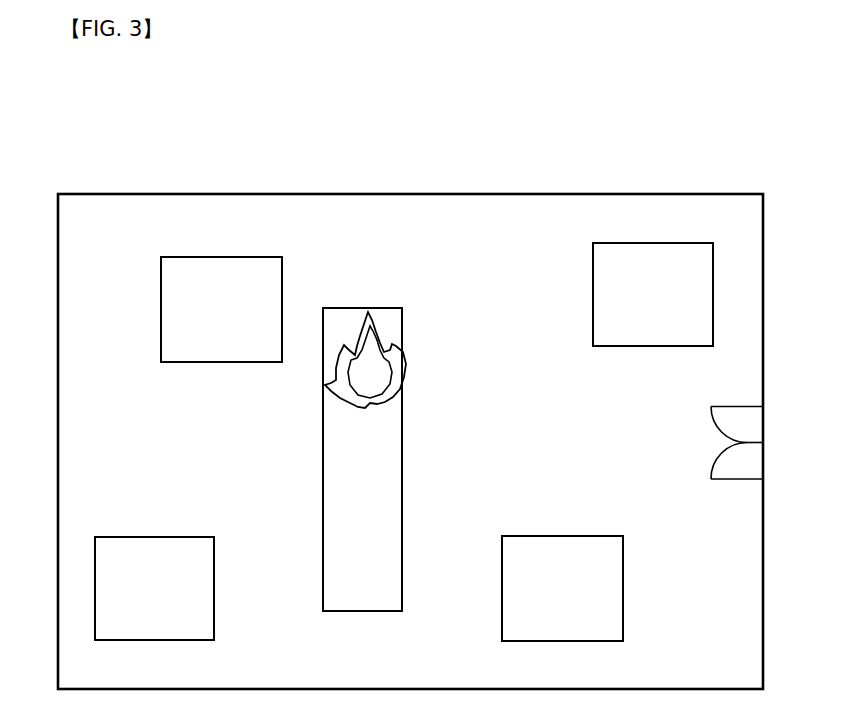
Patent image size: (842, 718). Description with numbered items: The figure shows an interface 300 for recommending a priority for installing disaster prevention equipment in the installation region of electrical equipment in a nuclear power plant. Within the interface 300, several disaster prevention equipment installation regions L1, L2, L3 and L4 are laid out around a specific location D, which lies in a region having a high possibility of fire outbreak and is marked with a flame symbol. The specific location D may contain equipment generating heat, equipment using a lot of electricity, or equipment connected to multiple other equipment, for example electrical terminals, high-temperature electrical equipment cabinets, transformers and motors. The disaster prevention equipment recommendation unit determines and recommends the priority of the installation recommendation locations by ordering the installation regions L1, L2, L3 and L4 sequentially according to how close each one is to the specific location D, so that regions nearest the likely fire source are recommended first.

The interface 300 is at (400, 128).
The disaster prevention equipment installation region L1 is at (221, 309).
The disaster prevention equipment installation region L2 is at (154, 588).
The disaster prevention equipment installation region L3 is at (562, 588).
The disaster prevention equipment installation region L4 is at (653, 294).
The specific location D is at (364, 459).